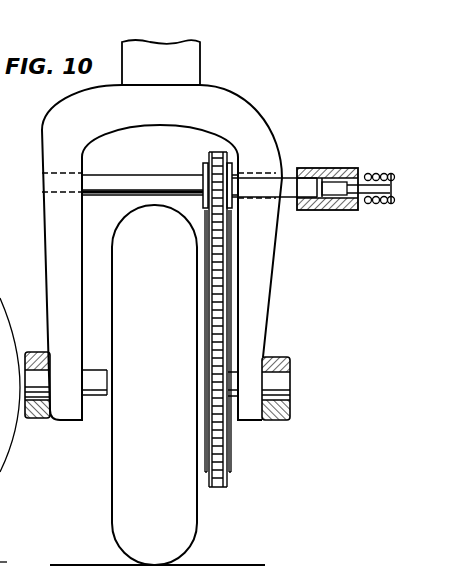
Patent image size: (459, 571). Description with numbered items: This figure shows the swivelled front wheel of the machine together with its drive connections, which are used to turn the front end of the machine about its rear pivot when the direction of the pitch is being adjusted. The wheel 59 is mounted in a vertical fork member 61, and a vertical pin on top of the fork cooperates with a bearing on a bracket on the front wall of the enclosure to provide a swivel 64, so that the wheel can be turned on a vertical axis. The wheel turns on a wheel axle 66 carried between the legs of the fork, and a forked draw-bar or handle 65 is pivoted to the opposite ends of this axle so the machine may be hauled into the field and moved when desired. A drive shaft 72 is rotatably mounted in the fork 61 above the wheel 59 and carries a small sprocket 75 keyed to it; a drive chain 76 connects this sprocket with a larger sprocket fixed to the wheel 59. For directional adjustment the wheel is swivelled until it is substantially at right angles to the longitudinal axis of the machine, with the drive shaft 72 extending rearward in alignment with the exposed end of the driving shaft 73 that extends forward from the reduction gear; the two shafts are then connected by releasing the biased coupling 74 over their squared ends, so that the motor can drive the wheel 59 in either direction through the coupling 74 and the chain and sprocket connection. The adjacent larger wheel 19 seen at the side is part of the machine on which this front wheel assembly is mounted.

The wheel 19 is at (10, 430).
The wheel 59 is at (147, 503).
The fork member 61 is at (60, 137).
The swivel 64 is at (187, 70).
The forked draw-bar or handle 65 is at (276, 356).
The wheel axle 66 is at (96, 396).
The drive shaft 72 is at (283, 178).
The driving shaft 73 is at (378, 203).
The biased coupling 74 is at (330, 167).
The small sprocket 75 is at (205, 170).
The drive chain 76 is at (225, 270).